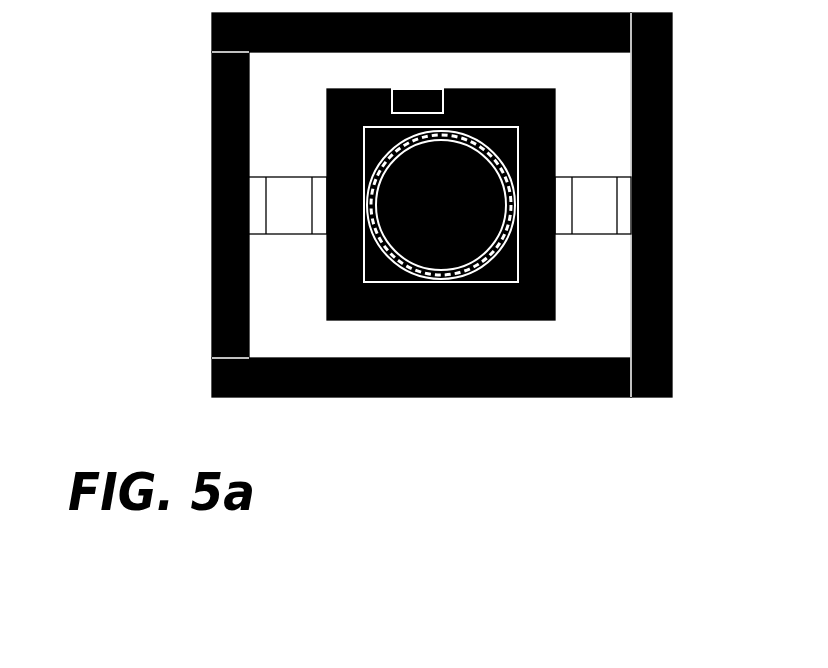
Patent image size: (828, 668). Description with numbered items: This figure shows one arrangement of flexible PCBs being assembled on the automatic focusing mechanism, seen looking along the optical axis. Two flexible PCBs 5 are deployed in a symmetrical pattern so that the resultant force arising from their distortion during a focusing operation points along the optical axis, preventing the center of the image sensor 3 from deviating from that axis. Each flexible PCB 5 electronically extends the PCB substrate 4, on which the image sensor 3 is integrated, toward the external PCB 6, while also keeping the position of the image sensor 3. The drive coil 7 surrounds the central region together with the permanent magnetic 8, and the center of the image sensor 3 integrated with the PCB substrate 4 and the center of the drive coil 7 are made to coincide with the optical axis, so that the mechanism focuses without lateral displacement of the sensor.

The image sensor 3 is at (374, 292).
The PCB substrate 4 is at (205, 198).
The flexible PCB 5 is at (282, 173).
The external PCB 6 is at (676, 232).
The drive coil 7 is at (512, 292).
The permanent magnetic 8 is at (524, 216).